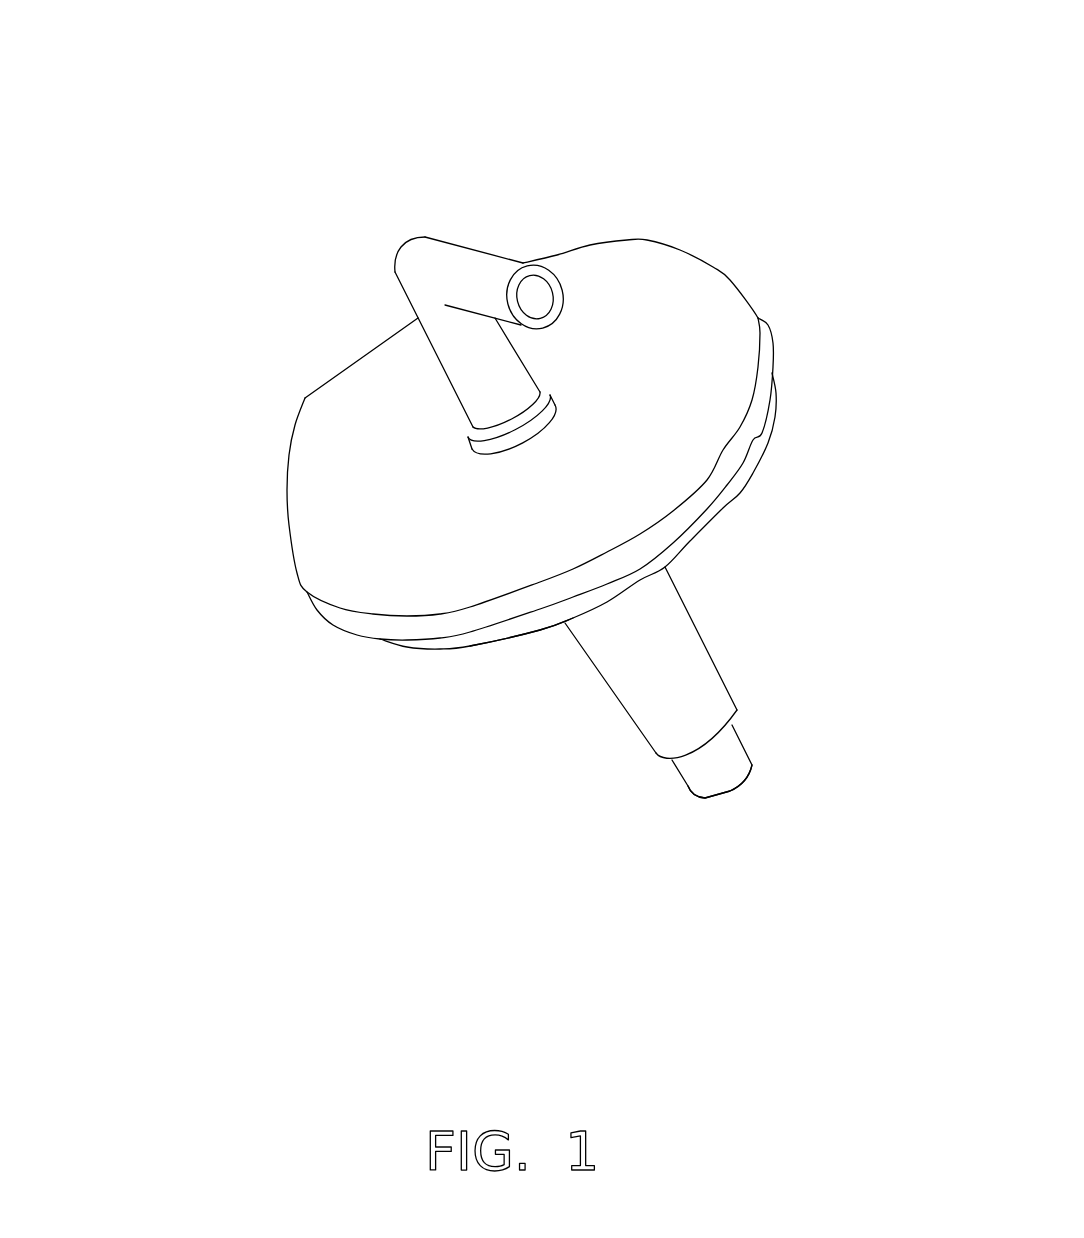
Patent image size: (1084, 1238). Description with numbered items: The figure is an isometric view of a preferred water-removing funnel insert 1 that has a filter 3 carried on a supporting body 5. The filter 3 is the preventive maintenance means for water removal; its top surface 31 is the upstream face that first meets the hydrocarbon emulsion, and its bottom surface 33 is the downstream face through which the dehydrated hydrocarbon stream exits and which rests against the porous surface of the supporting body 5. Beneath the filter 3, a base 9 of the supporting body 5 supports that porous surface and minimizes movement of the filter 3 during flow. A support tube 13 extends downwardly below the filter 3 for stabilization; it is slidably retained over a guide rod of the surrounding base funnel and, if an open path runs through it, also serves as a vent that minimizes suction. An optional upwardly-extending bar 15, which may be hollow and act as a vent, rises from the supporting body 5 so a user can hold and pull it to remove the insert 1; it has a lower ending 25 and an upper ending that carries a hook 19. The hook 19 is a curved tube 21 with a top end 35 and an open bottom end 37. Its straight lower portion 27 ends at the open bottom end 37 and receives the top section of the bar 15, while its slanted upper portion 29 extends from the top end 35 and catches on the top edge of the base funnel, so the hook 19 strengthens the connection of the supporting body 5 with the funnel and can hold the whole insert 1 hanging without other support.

The water-removing funnel insert 1 is at (212, 770).
The filter 3 is at (730, 278).
The supporting body 5 is at (445, 648).
The base 9 is at (550, 627).
The support tube 13 is at (707, 643).
The upwardly-extending bar 15 is at (757, 777).
The hook 19 is at (399, 231).
The curved tube 21 is at (407, 241).
The lower ending 25 is at (706, 800).
The straight lower portion 27 is at (433, 353).
The slanted upper portion 29 is at (483, 272).
The top surface 31 is at (667, 277).
The bottom surface 33 is at (723, 488).
The top end 35 is at (560, 313).
The open bottom end 37 is at (490, 455).